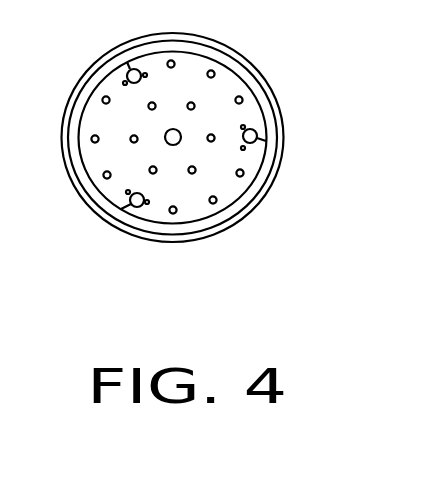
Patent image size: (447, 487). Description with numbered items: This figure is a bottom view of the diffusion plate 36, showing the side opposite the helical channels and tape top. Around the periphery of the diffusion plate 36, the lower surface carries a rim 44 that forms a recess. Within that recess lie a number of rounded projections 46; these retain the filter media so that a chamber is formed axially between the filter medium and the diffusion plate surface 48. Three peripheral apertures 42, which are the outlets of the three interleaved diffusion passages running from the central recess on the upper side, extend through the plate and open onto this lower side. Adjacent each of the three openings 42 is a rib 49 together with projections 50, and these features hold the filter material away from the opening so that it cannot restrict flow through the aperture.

The diffusion plate 36 is at (209, 38).
The peripheral apertures 42 is at (122, 204).
The rim 44 is at (102, 71).
The rounded projections 46 is at (213, 204).
The diffusion plate surface 48 is at (233, 191).
The rib 49 is at (262, 130).
The projections 50 is at (250, 129).